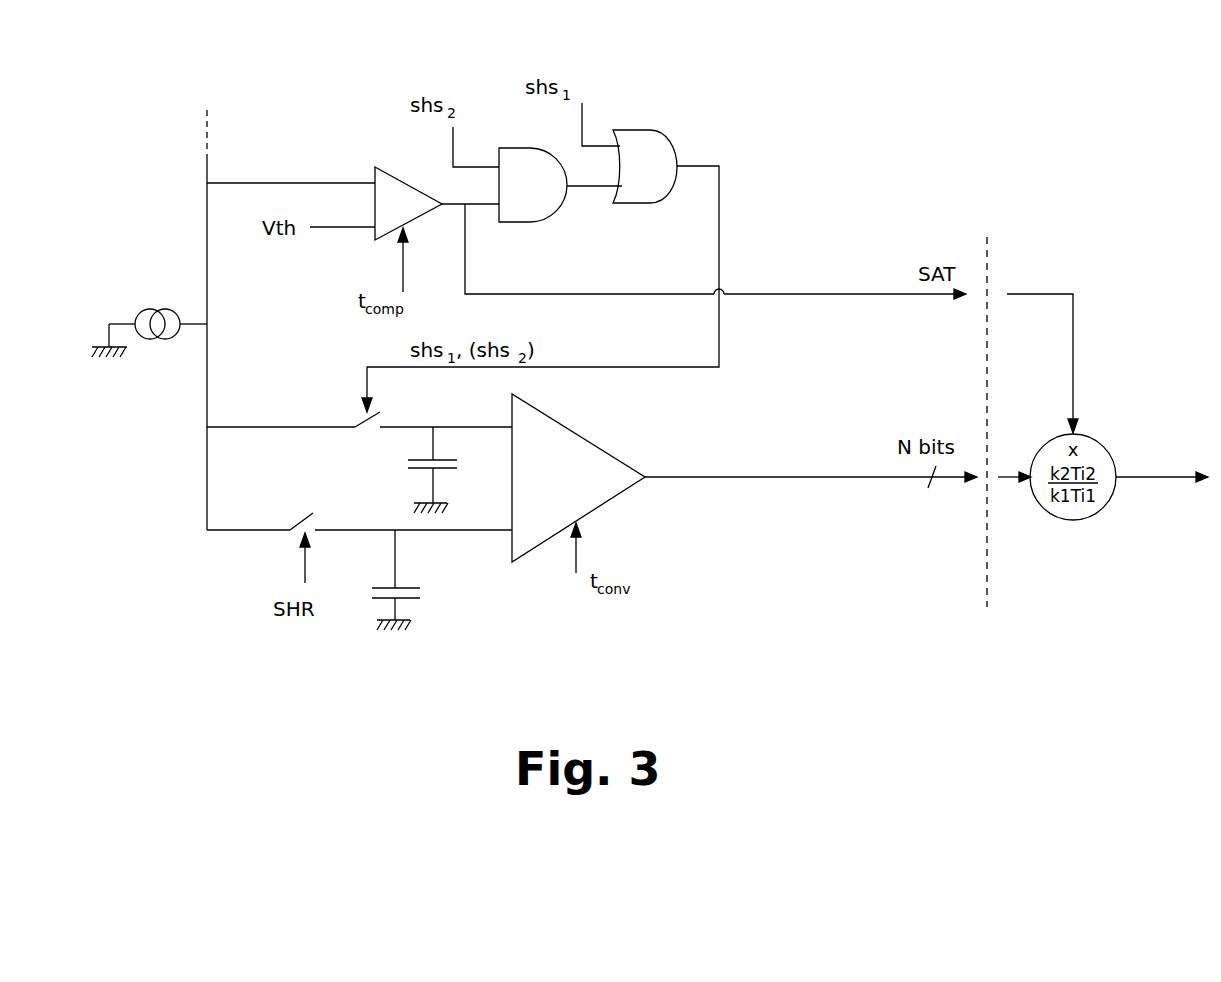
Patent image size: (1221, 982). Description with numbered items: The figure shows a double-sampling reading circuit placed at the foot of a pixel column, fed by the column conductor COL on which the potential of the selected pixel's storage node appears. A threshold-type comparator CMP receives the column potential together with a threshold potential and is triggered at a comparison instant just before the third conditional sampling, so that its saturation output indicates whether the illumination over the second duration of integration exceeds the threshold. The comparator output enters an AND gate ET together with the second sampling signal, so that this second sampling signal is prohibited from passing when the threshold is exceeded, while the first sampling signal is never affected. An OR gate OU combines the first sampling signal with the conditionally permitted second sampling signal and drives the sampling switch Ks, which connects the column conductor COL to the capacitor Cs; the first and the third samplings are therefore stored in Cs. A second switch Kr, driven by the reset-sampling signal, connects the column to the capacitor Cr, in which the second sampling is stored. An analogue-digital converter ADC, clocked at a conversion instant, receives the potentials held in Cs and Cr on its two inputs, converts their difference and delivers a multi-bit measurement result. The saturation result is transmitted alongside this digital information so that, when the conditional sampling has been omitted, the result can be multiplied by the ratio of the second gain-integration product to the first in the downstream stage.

The column conductor COL is at (175, 318).
The threshold-type comparator CMP is at (412, 198).
The AND gate ET is at (533, 185).
The OR gate OU is at (645, 166).
The sampling switch Ks is at (359, 434).
The capacitor Cs is at (416, 470).
The reset sampling switch Kr is at (359, 511).
The capacitor Cr is at (410, 580).
The analogue-digital converter ADC is at (578, 478).